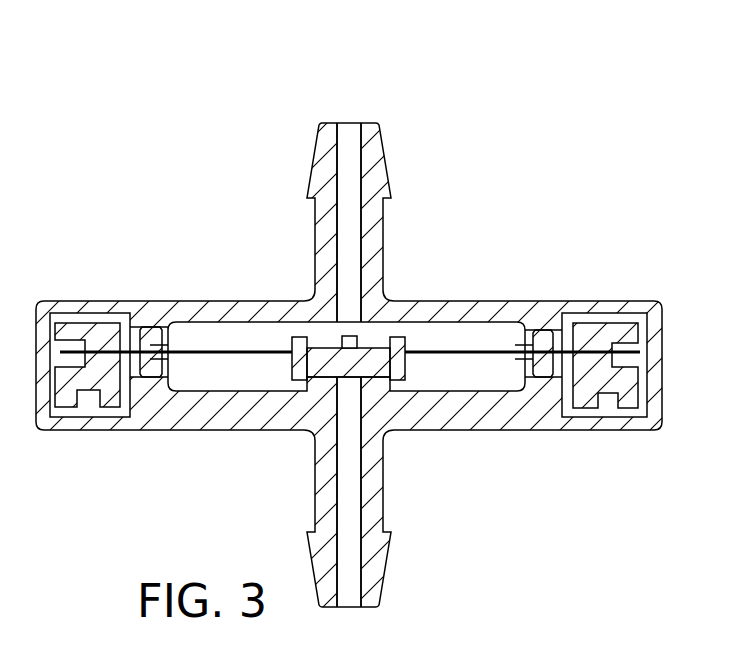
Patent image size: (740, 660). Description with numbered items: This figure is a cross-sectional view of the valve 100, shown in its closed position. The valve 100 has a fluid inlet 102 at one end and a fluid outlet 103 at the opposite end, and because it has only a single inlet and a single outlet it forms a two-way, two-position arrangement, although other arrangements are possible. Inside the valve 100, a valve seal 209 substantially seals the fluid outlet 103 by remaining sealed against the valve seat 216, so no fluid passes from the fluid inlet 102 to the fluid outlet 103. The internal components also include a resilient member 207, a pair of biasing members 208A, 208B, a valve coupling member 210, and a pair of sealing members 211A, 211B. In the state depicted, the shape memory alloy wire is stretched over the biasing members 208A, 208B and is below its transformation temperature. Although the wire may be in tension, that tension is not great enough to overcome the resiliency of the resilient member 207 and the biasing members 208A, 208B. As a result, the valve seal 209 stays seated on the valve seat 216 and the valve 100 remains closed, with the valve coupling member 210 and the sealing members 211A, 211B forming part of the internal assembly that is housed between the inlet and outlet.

The valve 100 is at (571, 149).
The fluid inlet 102 is at (353, 128).
The fluid outlet 103 is at (355, 600).
The resilient member 207 is at (218, 349).
The biasing member 208A is at (90, 400).
The biasing member 208B is at (604, 398).
The valve seal 209 is at (292, 380).
The valve coupling member 210 is at (400, 380).
The sealing member 211A is at (546, 336).
The sealing member 211B is at (545, 378).
The valve seat 216 is at (318, 378).